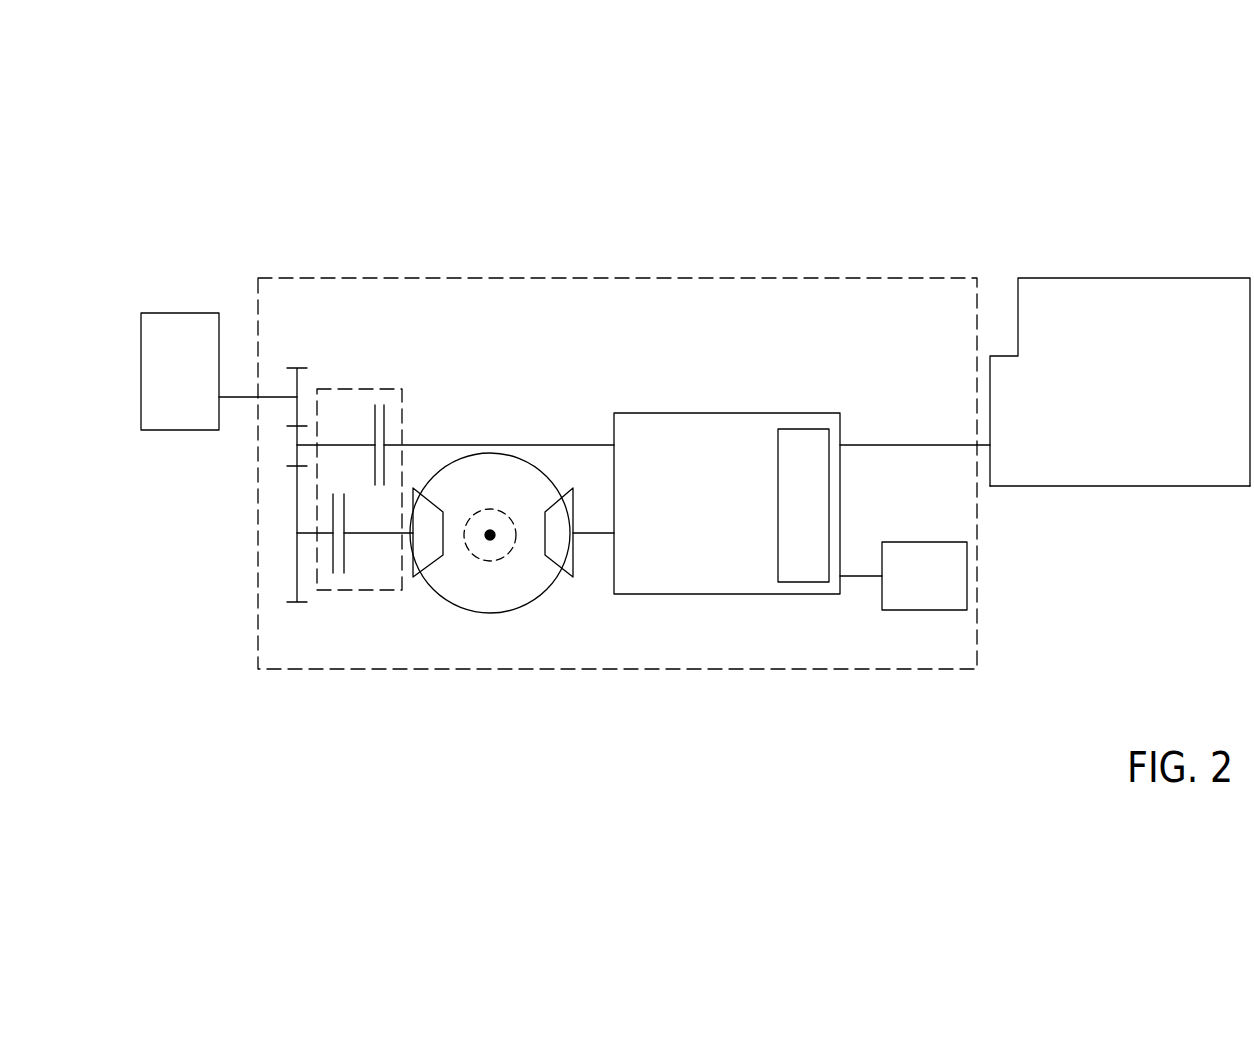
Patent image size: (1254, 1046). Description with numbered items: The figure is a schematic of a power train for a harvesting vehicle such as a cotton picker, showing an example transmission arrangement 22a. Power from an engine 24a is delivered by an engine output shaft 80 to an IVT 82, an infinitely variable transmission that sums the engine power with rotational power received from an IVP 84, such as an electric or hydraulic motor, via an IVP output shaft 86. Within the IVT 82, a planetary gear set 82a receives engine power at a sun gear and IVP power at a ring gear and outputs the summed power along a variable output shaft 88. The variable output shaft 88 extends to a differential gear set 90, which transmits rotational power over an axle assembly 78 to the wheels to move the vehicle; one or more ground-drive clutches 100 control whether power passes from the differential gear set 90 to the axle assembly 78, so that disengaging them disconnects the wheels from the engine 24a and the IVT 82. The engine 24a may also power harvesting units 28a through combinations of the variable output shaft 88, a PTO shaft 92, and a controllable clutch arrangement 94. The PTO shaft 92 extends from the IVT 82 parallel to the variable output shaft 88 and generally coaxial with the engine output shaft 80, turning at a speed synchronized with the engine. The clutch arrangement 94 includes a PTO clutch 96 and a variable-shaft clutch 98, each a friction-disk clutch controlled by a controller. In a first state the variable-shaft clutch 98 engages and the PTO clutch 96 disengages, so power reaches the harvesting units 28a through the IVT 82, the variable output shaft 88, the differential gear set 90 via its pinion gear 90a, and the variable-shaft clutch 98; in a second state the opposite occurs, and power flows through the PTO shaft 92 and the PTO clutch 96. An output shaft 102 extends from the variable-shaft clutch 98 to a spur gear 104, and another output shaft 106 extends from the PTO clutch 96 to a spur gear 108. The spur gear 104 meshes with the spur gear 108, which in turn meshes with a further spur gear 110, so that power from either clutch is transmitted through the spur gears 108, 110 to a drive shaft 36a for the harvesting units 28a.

The transmission arrangement 22a is at (977, 310).
The engine 24a is at (1077, 486).
The harvesting units 28a is at (195, 313).
The drive shaft 36a is at (243, 397).
The axle assembly 78 is at (491, 535).
The engine output shaft 80 is at (912, 445).
The IVT 82 is at (795, 413).
The planetary gear set 82a is at (812, 582).
The IVP 84 is at (942, 610).
The IVP output shaft 86 is at (862, 576).
The variable output shaft 88 is at (597, 540).
The differential gear set 90 is at (512, 610).
The pinion gear 90a is at (418, 577).
The PTO shaft 92 is at (596, 445).
The clutch arrangement 94 is at (376, 389).
The PTO clutch 96 is at (385, 430).
The variable-shaft clutch 98 is at (345, 549).
The ground-drive clutches 100 is at (497, 510).
The output shaft 102 is at (310, 533).
The spur gear 104 is at (297, 573).
The output shaft 106 is at (340, 445).
The spur gear 108 is at (297, 455).
The spur gear 110 is at (297, 413).